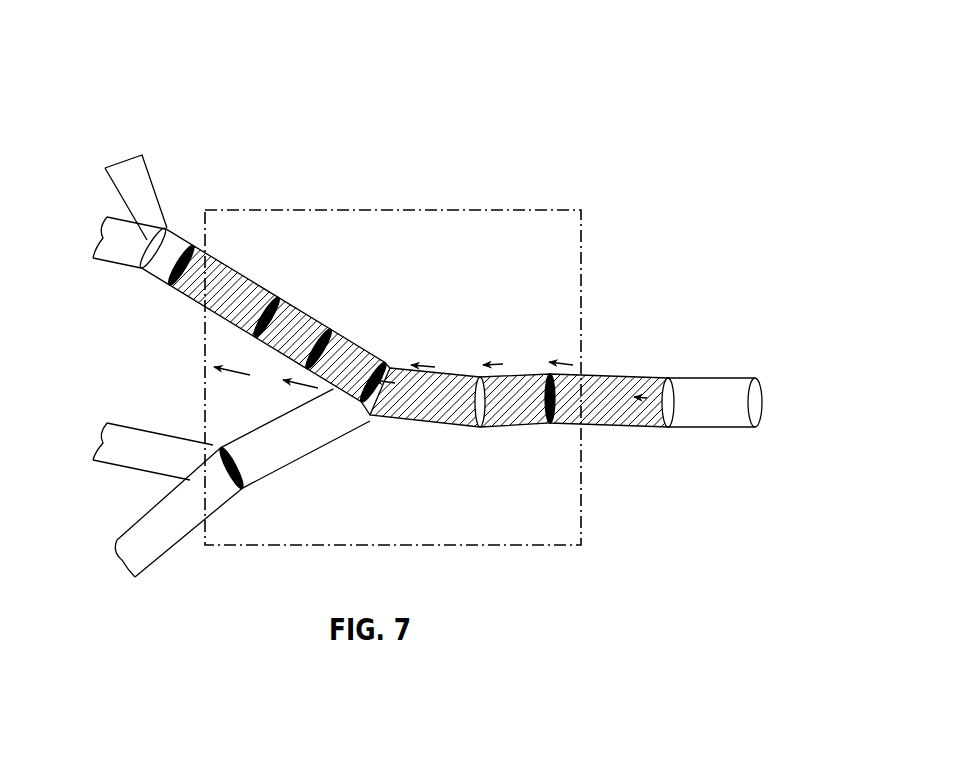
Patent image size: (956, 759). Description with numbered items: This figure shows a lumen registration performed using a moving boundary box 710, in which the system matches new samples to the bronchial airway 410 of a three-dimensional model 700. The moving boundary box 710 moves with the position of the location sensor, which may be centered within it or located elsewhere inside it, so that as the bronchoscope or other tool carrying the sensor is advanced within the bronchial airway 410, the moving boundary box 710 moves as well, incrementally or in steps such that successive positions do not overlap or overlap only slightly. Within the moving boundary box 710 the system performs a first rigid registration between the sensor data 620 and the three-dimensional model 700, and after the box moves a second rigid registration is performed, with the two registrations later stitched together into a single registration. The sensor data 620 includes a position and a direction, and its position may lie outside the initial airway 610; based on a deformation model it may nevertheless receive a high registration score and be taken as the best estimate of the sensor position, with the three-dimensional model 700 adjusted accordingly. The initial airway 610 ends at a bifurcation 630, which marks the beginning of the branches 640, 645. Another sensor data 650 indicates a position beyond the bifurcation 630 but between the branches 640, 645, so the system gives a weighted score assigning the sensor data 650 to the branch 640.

The 3D model 700 is at (551, 49).
The moving boundary box 710 is at (393, 210).
The sensor data 650 is at (333, 330).
The branch 640 is at (348, 343).
The bifurcation 630 is at (334, 389).
The sensor data 620 is at (488, 363).
The initial airway 610 is at (647, 428).
The bronchial airway 410 is at (727, 377).
The branch 645 is at (313, 433).